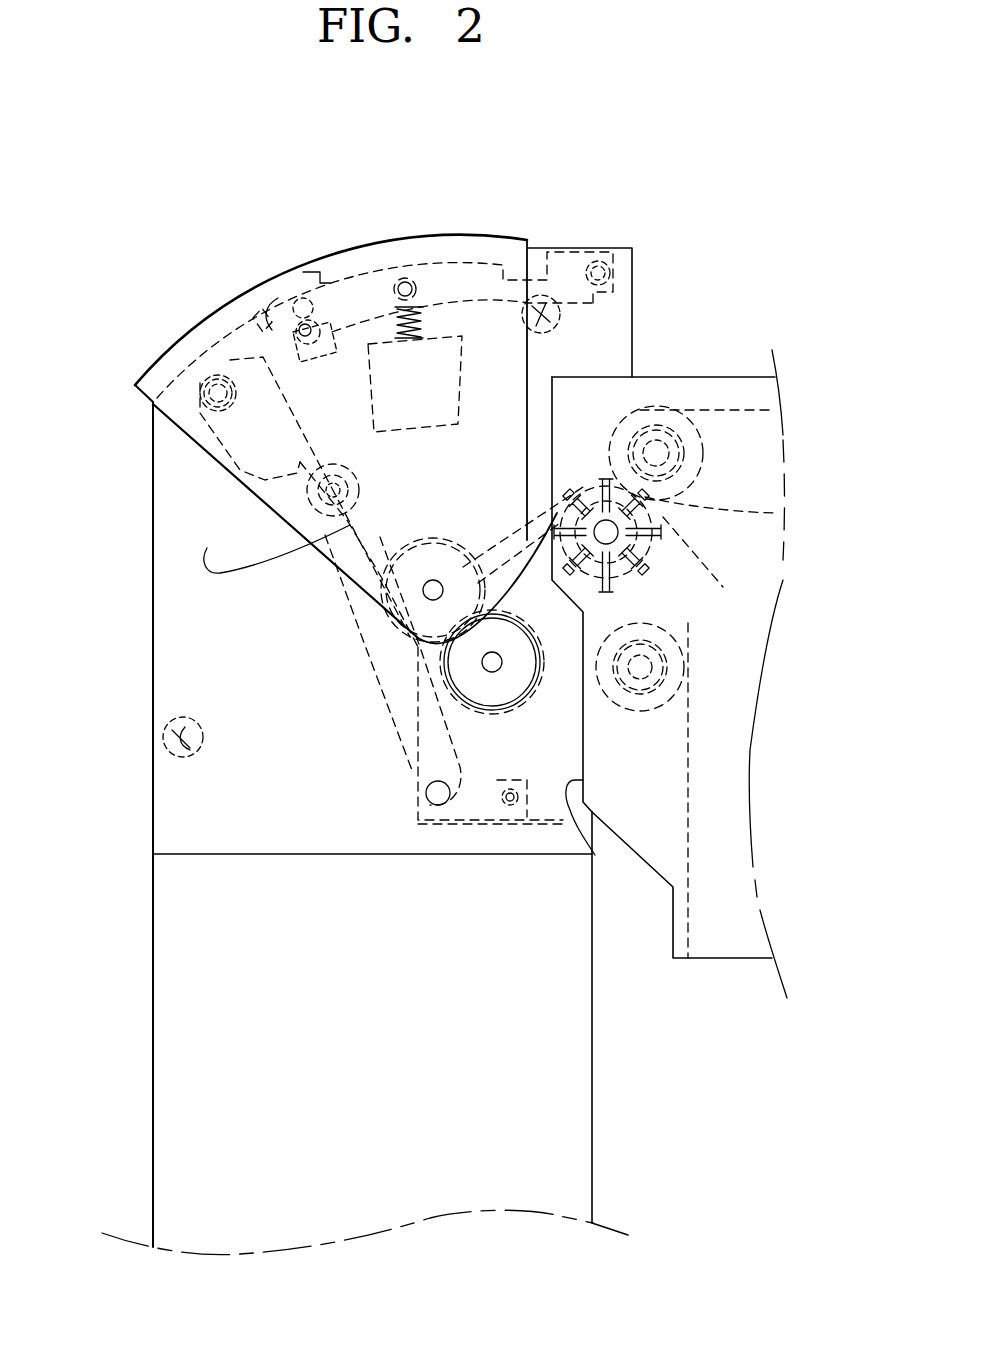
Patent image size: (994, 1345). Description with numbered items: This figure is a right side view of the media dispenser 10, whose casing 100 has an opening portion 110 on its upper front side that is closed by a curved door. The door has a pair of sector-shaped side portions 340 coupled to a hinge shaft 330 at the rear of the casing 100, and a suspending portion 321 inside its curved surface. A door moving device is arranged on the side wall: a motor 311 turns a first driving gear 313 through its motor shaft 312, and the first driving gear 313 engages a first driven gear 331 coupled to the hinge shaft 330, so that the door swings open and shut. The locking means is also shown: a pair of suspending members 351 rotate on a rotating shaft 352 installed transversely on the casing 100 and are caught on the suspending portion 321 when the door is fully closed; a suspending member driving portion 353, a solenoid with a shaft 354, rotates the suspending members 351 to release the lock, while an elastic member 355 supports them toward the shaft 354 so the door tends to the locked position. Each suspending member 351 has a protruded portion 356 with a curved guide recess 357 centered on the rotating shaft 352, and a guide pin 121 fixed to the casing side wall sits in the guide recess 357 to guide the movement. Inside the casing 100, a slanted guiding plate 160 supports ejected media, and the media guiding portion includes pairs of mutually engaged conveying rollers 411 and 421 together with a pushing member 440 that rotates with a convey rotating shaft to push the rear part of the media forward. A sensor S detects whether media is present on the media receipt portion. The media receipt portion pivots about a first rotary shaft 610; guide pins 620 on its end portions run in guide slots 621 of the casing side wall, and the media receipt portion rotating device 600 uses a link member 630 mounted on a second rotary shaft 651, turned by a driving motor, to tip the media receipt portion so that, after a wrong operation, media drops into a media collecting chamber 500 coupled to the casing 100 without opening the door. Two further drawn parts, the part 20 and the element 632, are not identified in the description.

The casing 100 is at (148, 832).
The opening portion 110 is at (235, 332).
The guide pins 121 is at (280, 305).
The suspending members 351 is at (357, 297).
The side portions 340 is at (462, 240).
The suspending member driving portion 353 is at (442, 344).
The shaft of the solenoid 354 is at (422, 300).
The elastic member 355 is at (395, 330).
The rotating shaft 352 is at (598, 262).
The sensor S is at (553, 307).
The guide recesses 357 is at (285, 318).
The protruded portions 356 is at (297, 322).
The suspending portion 321 is at (303, 300).
The conveying rollers 411 is at (684, 430).
The pushing member 440 is at (630, 495).
The conveying rollers 421 is at (640, 552).
The guiding plate 160 is at (515, 572).
The first driven gear 331 is at (520, 580).
The hinge shaft 330 is at (433, 590).
The first driving gear 313 is at (537, 646).
The motor 311 is at (535, 665).
The motor shaft 312 is at (497, 663).
The first rotary shaft 610 is at (205, 390).
The idler roller 632 is at (325, 497).
The guide pins 620 is at (335, 508).
The guide slots 621 is at (207, 548).
The link member 630 is at (403, 712).
The second rotary shaft 651 is at (438, 806).
The media receipt portion rotating device 600 is at (381, 704).
The frame 20 is at (592, 812).
The media dispenser 10 is at (733, 945).
The media collecting chamber 500 is at (555, 1052).